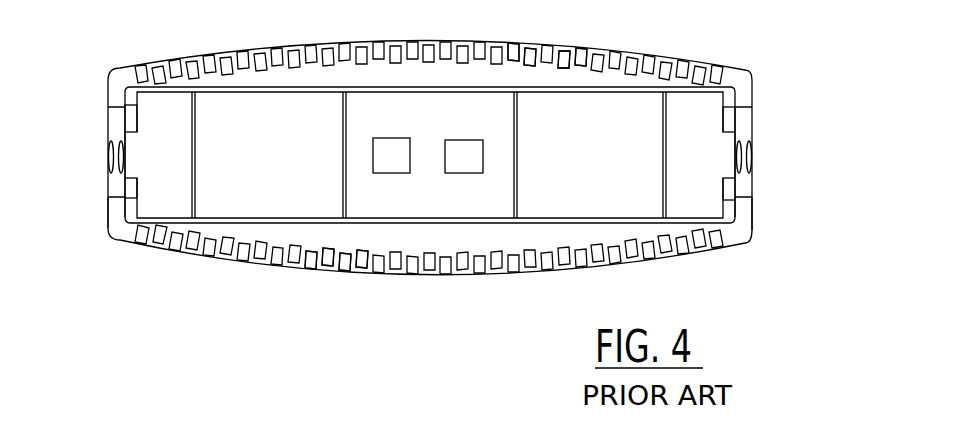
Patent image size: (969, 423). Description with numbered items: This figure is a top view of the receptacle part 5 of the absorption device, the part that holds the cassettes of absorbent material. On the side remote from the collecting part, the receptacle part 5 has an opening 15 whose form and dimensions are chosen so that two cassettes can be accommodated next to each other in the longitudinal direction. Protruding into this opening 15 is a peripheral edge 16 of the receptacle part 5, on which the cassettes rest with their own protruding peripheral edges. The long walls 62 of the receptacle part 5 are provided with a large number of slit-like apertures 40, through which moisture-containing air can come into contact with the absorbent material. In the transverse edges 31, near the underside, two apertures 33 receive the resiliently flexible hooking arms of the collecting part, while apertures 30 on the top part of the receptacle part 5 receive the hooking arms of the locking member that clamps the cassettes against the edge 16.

The receptacle part 5 is at (241, 278).
The opening 15 is at (730, 100).
The peripheral edge 16 is at (221, 93).
The apertures 30 is at (127, 156).
The transverse edges 31 is at (117, 205).
The apertures 33 is at (108, 153).
The slit-like apertures 40 is at (587, 48).
The long walls 62 is at (297, 46).